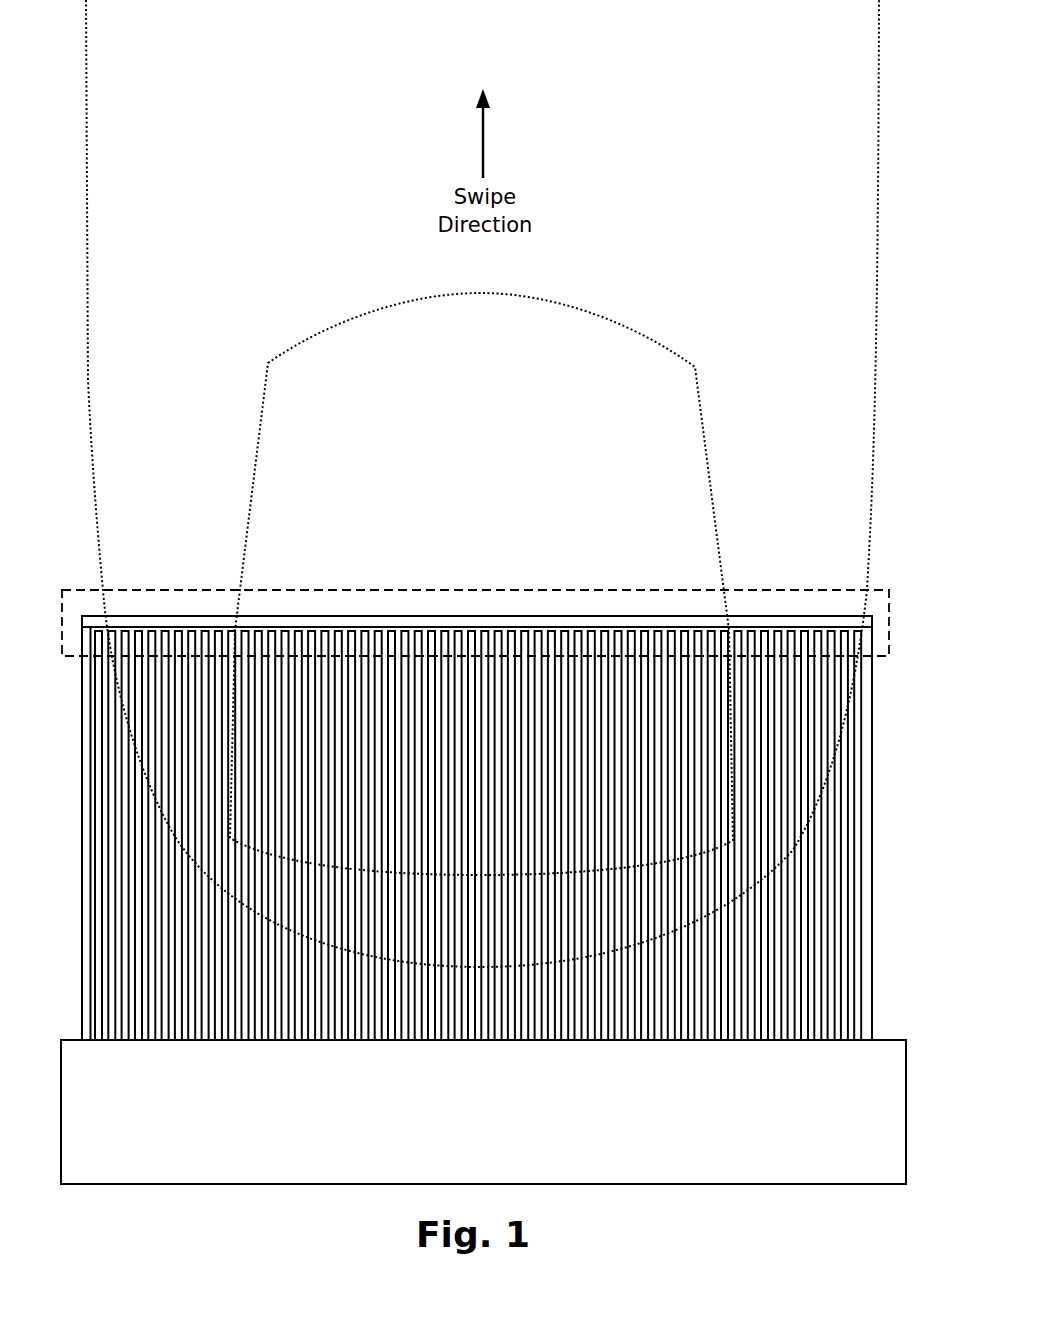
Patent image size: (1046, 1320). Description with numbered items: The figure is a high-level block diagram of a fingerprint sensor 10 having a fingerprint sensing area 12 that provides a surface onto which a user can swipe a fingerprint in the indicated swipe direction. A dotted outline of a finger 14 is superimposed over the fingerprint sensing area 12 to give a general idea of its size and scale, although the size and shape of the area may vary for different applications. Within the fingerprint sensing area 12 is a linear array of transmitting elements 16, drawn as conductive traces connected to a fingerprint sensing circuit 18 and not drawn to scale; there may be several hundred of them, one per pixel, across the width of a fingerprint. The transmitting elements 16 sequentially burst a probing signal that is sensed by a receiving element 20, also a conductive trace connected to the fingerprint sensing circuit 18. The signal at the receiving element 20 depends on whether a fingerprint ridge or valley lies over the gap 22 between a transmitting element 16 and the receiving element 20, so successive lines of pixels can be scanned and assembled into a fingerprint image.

The fingerprint sensor 10 is at (501, 819).
The fingerprint sensing area 12 is at (590, 591).
The finger 14 is at (873, 538).
The transmitting elements 16 is at (351, 630).
The fingerprint sensing circuit 18 is at (839, 1081).
The receiving element 20 is at (358, 620).
The gap 22 is at (882, 626).